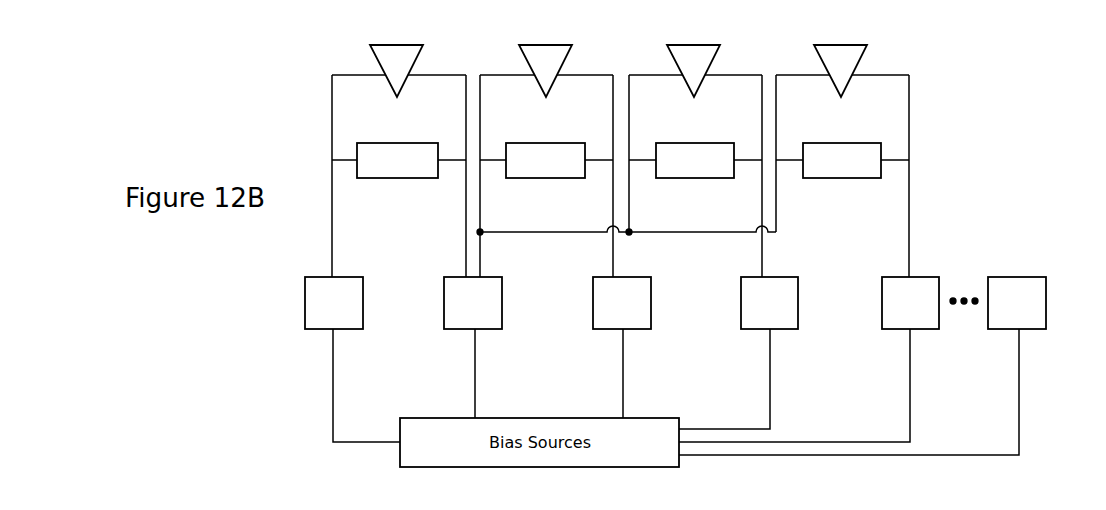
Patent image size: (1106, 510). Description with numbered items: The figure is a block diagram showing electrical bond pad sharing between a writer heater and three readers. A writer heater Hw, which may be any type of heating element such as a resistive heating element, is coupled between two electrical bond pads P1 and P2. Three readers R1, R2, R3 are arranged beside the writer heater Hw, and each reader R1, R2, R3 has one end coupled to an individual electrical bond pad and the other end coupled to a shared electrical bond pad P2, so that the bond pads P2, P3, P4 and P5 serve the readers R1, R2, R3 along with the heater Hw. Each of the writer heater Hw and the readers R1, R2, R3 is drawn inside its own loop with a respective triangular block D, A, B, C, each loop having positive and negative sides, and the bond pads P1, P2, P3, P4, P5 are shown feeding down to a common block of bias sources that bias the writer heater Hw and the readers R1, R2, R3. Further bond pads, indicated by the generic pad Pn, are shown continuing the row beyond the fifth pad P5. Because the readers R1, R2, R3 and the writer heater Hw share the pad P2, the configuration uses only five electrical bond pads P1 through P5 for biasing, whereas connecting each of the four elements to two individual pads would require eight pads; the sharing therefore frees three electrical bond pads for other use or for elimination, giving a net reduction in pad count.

The amplifier D is at (396, 71).
The amplifier A is at (545, 71).
The amplifier B is at (693, 71).
The amplifier C is at (840, 71).
The writer heater Hw is at (397, 160).
The reader R1 is at (545, 160).
The reader R2 is at (695, 160).
The reader R3 is at (842, 160).
The electrical bond pad P1 is at (334, 303).
The electrical bond pad P2 is at (473, 303).
The electrical bond pad P3 is at (622, 303).
The electrical bond pad P4 is at (769, 303).
The electrical bond pad P5 is at (910, 303).
The bias port Pn is at (1017, 303).